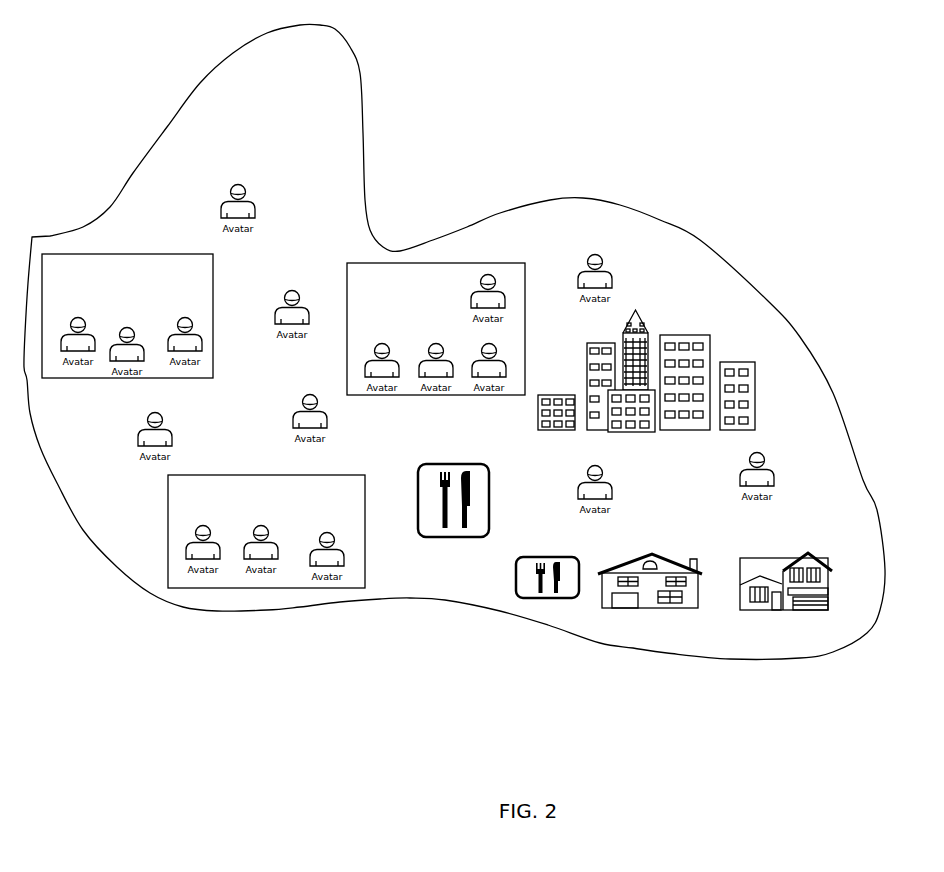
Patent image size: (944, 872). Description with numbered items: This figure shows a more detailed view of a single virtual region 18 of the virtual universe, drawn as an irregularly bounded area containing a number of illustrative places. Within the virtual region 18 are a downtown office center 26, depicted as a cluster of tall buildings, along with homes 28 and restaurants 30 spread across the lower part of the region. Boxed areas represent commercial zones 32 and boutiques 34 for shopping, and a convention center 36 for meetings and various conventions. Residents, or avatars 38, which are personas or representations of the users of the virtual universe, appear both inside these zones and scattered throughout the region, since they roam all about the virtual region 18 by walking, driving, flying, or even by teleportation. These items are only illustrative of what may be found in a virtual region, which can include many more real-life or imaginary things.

The virtual region 18 is at (362, 76).
The downtown office center 26 is at (704, 328).
The homes 28 is at (660, 608).
The restaurants 30 is at (489, 505).
The commercial zones 32 is at (128, 254).
The boutiques 34 is at (168, 531).
The convention center 36 is at (430, 396).
The avatars 38 is at (257, 200).